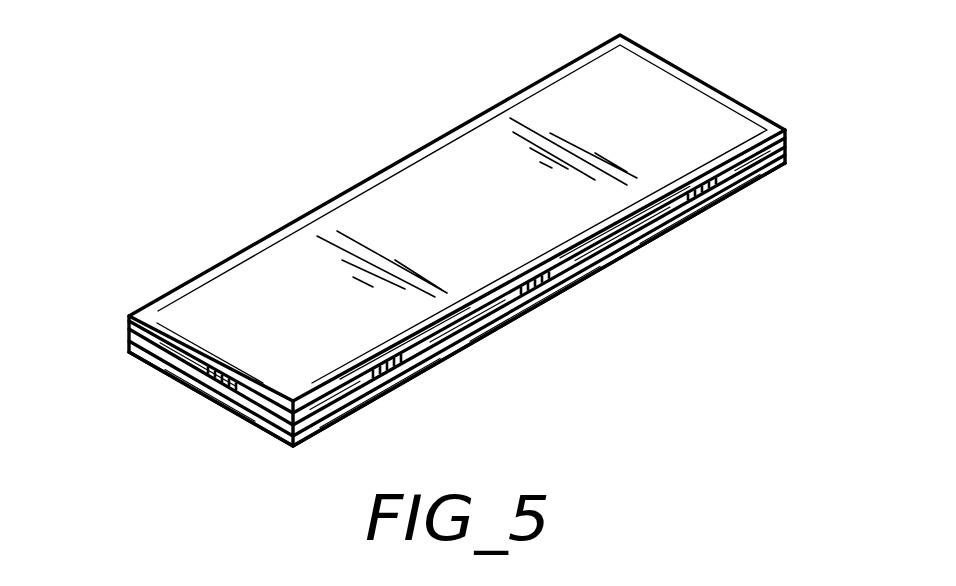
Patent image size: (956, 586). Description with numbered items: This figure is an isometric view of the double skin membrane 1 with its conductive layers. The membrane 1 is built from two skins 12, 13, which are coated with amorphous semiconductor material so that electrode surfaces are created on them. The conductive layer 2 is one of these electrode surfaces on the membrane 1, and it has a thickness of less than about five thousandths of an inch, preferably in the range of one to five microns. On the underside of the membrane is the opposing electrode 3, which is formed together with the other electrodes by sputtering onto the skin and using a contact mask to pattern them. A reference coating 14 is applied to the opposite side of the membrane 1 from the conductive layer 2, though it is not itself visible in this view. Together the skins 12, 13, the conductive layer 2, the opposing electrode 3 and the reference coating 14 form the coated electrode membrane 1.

The membrane 1 is at (792, 136).
The conductive layer 2 is at (462, 193).
The opposing electrode 3 is at (463, 350).
The skin 12 is at (197, 384).
The skin 13 is at (190, 385).
The reference coating 14 is at (630, 257).